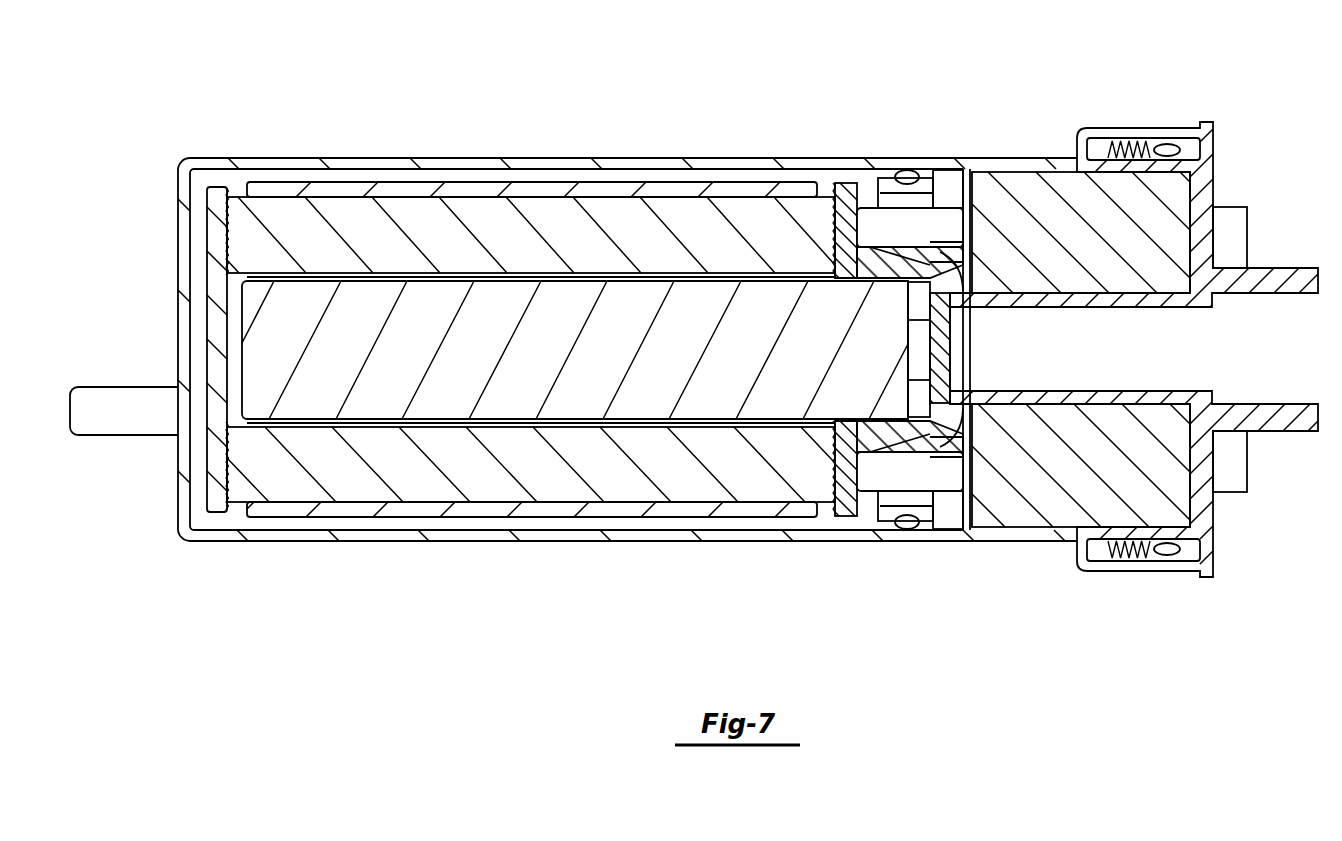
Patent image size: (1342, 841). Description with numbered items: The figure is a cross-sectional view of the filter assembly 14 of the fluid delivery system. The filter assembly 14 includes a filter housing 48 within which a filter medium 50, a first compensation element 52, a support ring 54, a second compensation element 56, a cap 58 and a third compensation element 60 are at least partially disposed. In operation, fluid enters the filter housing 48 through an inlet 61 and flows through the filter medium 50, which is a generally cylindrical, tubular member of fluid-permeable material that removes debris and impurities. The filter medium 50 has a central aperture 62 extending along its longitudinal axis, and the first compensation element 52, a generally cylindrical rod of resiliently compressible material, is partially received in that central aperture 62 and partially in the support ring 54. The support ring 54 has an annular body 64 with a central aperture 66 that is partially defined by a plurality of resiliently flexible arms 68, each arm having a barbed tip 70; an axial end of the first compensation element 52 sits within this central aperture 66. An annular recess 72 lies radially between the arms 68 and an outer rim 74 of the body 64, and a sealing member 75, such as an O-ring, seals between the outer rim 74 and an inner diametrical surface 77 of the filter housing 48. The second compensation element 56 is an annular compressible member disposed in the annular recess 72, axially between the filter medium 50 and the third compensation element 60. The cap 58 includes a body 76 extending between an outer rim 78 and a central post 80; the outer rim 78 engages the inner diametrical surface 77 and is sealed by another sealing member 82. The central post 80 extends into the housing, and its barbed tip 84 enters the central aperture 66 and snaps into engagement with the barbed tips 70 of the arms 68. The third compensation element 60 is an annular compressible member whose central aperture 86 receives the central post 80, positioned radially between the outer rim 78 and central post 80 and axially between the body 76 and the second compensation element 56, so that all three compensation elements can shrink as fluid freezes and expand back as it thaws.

The filter assembly 14 is at (283, 100).
The filter housing 48 is at (484, 157).
The filter medium 50 is at (601, 205).
The first compensation element 52 is at (410, 305).
The support ring 54 is at (835, 182).
The second compensation element 56 is at (950, 215).
The cap 58 is at (1212, 131).
The third compensation element 60 is at (1028, 190).
The inlet 61 is at (125, 400).
The central aperture 62 is at (292, 279).
The annular body 64 is at (857, 170).
The central aperture 66 is at (850, 288).
The resiliently flexible arms 68 is at (945, 252).
The barbed tip 70 is at (950, 330).
The annular recess 72 is at (917, 247).
The outer rim 74 is at (886, 525).
The sealing member 75 is at (912, 532).
The body 76 is at (1208, 195).
The inner diametrical surface 77 is at (736, 523).
The outer rim 78 is at (1125, 141).
The central post 80 is at (1075, 395).
The sealing member 82 is at (1166, 144).
The barbed tip 84 is at (925, 405).
The central aperture 86 is at (1084, 296).